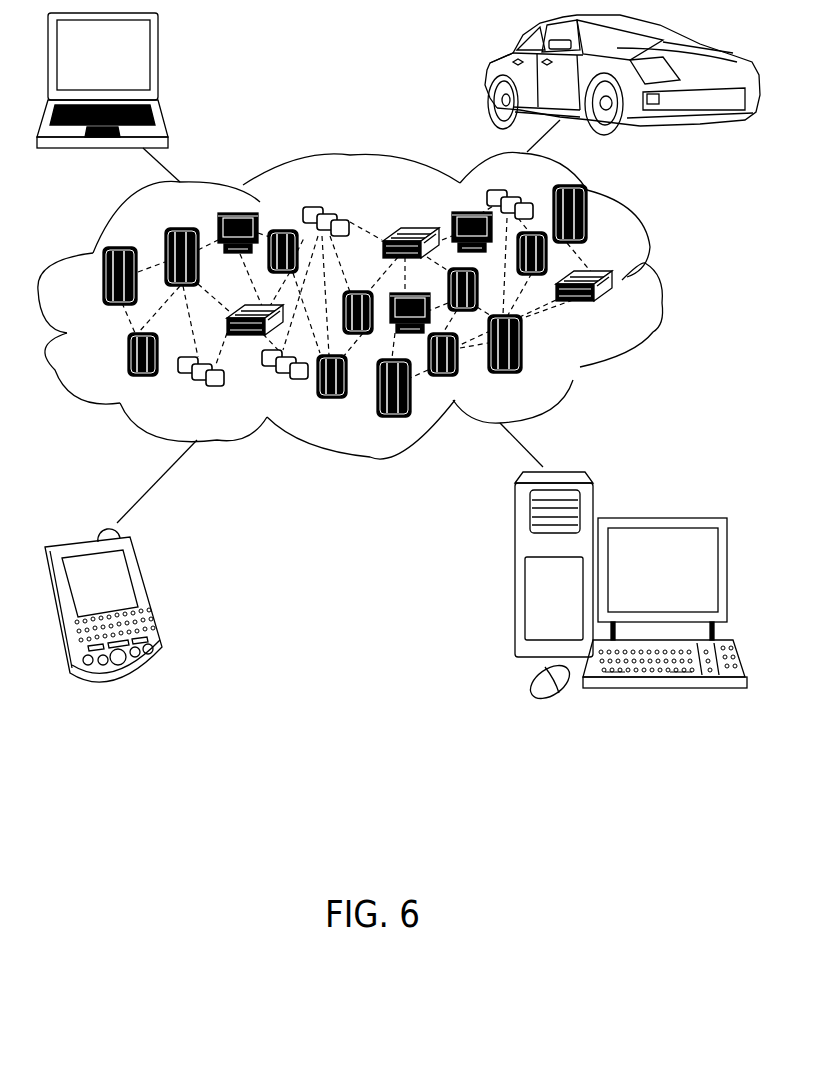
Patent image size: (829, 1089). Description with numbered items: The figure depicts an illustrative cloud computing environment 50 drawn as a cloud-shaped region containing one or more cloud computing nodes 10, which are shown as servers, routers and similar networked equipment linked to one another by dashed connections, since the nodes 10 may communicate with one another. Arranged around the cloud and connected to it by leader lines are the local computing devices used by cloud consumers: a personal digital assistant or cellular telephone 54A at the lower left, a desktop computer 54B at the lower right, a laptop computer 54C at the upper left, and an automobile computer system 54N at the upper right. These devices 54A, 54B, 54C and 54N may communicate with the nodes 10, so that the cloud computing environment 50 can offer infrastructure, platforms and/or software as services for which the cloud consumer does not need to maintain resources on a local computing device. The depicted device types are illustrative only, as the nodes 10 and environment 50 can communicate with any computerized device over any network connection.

The cloud computing node 10 is at (399, 301).
The cloud computing environment 50 is at (666, 284).
The personal digital assistant or cellular telephone 54A is at (150, 595).
The desktop computer 54B is at (660, 517).
The laptop computer 54C is at (160, 62).
The automobile computer system 54N is at (487, 80).